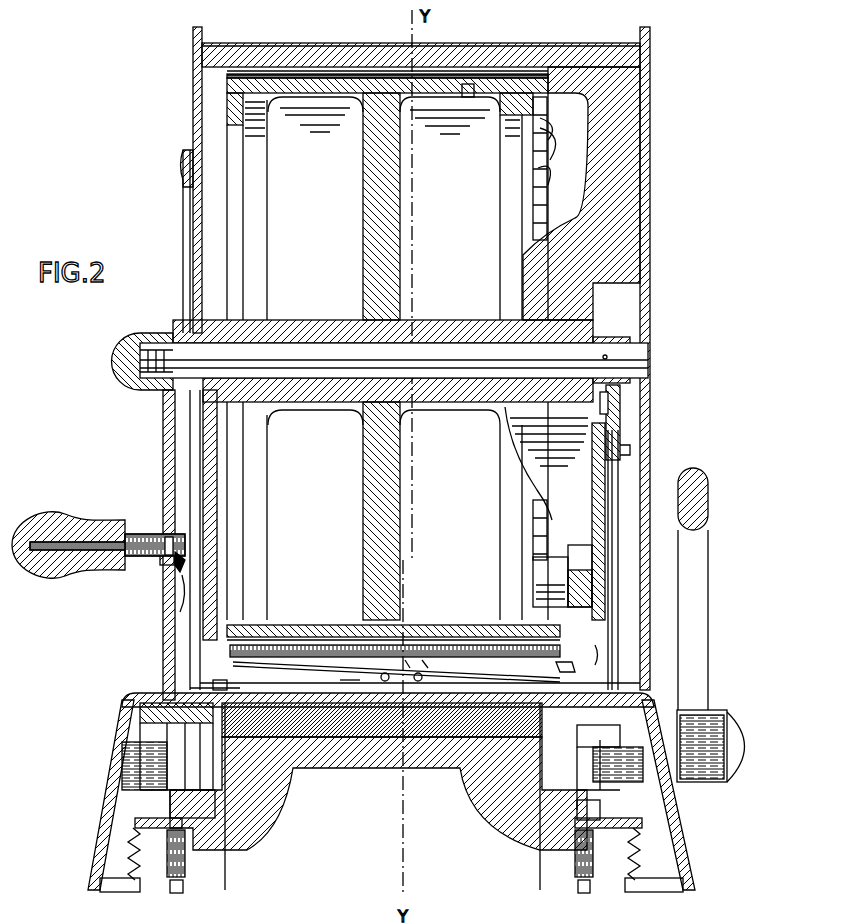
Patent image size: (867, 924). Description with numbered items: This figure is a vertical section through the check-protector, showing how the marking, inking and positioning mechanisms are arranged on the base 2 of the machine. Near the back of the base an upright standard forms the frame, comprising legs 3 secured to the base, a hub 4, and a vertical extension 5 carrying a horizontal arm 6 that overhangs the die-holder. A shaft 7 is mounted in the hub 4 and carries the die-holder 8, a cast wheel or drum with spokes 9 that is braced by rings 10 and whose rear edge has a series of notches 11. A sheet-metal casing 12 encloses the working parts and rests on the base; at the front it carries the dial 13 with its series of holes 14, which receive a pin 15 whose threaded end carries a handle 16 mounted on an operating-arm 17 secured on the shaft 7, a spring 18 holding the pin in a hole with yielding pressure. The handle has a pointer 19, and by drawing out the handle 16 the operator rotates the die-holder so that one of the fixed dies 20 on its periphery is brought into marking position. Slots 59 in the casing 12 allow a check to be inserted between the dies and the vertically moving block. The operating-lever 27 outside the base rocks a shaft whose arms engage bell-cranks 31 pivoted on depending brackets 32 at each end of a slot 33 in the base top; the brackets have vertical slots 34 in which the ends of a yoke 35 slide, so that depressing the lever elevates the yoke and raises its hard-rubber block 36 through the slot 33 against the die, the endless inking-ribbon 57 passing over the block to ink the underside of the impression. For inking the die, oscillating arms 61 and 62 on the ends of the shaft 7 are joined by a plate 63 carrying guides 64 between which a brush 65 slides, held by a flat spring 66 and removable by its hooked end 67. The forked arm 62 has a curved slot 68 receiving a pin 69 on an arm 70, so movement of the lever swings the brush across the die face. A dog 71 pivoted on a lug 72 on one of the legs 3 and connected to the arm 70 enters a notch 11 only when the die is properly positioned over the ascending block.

The base 2 is at (118, 721).
The legs 3 is at (548, 478).
The hub 4 is at (445, 330).
The vertical extension 5 is at (622, 203).
The horizontal arm 6 is at (387, 50).
The shaft 7 is at (312, 356).
The die-holder 8 is at (468, 92).
The spokes 9 is at (400, 184).
The rings 10 is at (253, 180).
The notches 11 is at (548, 132).
The sheet-metal casing 12 is at (298, 44).
The dial 13 is at (193, 207).
The holes 14 is at (184, 170).
The pin 15 is at (176, 565).
The handle 16 is at (70, 572).
The operating-arm 17 is at (165, 471).
The spring 18 is at (147, 535).
The pointer 19 is at (182, 590).
The fixed dies 20 is at (247, 80).
The operating-lever 27 is at (704, 642).
The bell-cranks 31 is at (120, 878).
The depending brackets 32 is at (202, 777).
The slot 33 is at (215, 690).
The vertical slots 34 is at (205, 750).
The yoke 35 is at (346, 756).
The rectangular block 36 is at (435, 742).
The endless inking-ribbon 57 is at (388, 745).
The slots 59 is at (200, 690).
The oscillating arm 61 is at (216, 518).
The oscillating arm 62 is at (600, 504).
The plate 63 is at (346, 672).
The guides 64 is at (425, 664).
The brush 65 is at (406, 664).
The flat spring 66 is at (302, 666).
The hooked end 67 is at (600, 652).
The curved slot 68 is at (620, 416).
The pin 69 is at (608, 398).
The arm 70 is at (620, 450).
The dog 71 is at (553, 580).
The lug 72 is at (580, 568).